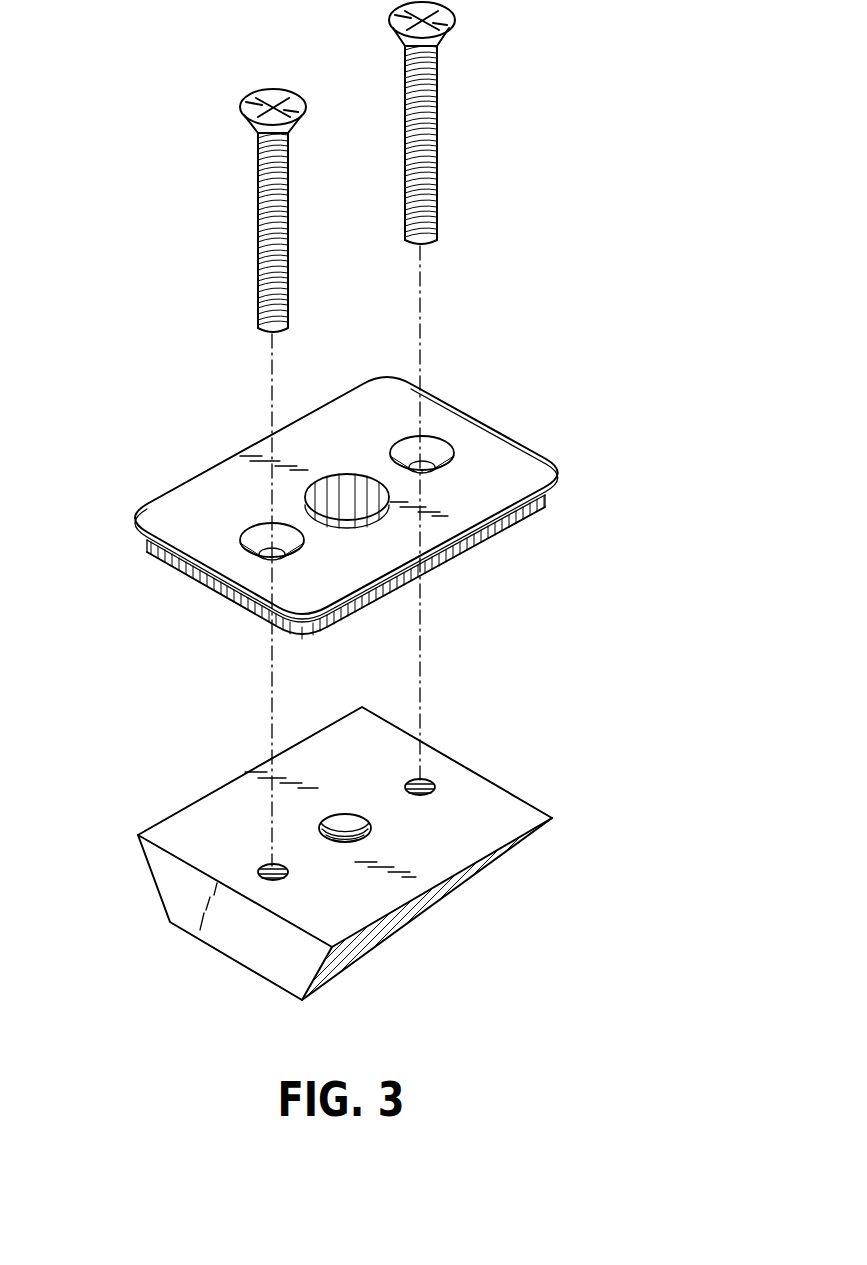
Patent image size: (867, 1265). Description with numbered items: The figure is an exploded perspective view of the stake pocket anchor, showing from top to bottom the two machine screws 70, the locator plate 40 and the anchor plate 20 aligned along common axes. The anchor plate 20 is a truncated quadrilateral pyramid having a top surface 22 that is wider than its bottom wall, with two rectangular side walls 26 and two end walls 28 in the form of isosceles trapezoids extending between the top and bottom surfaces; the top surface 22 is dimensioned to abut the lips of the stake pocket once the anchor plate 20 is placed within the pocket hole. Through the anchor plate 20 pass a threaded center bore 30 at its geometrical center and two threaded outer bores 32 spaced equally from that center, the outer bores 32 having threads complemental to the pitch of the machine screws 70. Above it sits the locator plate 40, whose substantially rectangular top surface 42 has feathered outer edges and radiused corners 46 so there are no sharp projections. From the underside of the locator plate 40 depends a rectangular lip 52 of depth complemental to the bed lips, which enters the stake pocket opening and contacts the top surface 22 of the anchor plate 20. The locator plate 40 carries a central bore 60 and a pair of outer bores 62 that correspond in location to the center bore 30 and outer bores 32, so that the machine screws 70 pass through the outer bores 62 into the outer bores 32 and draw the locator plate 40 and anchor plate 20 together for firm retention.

The anchor plate 20 is at (387, 847).
The top surface 22 is at (314, 909).
The side wall 26 is at (396, 932).
The end wall 28 is at (236, 950).
The center bore 30 is at (370, 825).
The outer bore 32 is at (415, 779).
The locator plate 40 is at (327, 507).
The top surface 42 is at (331, 572).
The radiused corner 46 is at (123, 517).
The lip 52 is at (312, 636).
The central bore 60 is at (358, 482).
The outer bore 62 is at (431, 455).
The machine screw 70 is at (437, 128).